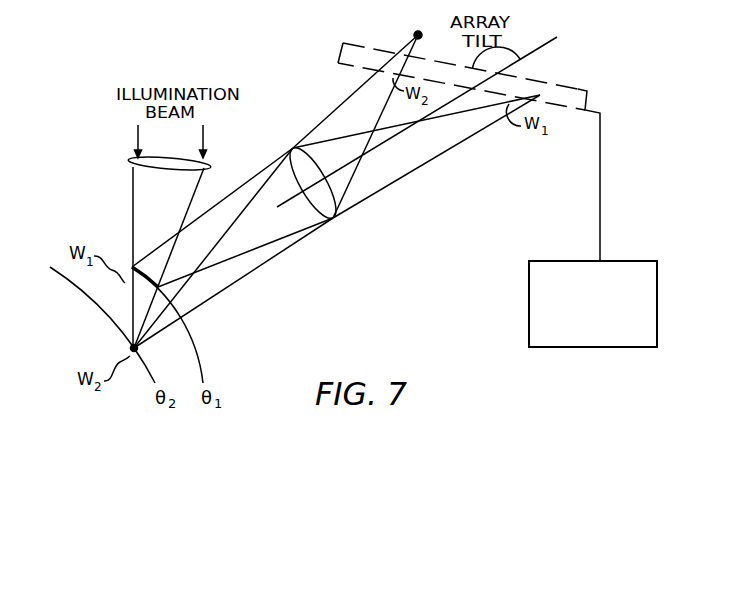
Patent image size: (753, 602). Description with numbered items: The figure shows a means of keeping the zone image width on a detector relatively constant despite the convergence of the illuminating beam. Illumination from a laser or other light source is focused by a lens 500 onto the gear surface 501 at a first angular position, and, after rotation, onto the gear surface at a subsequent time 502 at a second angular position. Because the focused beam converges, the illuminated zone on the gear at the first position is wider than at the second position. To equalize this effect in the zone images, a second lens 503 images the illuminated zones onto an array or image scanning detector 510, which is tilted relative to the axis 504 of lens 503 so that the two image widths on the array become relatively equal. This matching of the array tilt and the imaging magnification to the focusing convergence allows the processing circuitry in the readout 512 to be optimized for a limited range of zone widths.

The lens 500 is at (126, 172).
The gear surface 501 is at (190, 337).
The gear surface at a subsequent time 502 is at (100, 317).
The lens 503 is at (335, 219).
The axis 504 is at (383, 143).
The array or image scanning detector 510 is at (579, 90).
The readout 512 is at (602, 317).